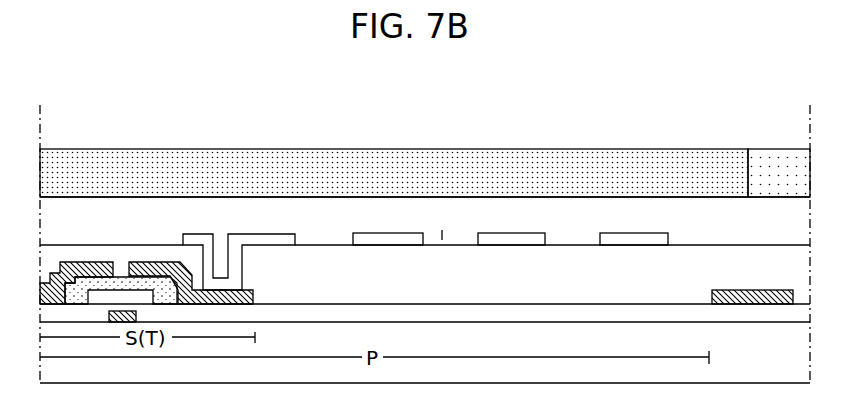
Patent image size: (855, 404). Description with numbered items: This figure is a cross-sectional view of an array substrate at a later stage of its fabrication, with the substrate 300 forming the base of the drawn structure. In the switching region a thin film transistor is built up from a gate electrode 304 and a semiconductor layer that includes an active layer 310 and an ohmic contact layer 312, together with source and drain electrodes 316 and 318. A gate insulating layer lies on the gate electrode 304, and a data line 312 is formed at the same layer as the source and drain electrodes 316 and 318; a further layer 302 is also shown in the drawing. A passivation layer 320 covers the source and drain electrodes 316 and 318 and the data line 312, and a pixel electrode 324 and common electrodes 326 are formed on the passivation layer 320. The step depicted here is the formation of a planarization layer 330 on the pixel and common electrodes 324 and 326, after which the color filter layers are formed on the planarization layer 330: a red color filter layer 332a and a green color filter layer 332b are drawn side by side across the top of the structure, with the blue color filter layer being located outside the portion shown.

The substrate 300 is at (789, 367).
The gate electrode 302 is at (119, 311).
The gate electrode 304 is at (685, 308).
The active layer 310 is at (177, 280).
The data line 312 is at (82, 262).
The source electrode 316 is at (46, 274).
The drain electrode 318 is at (281, 232).
The passivation layer 320 is at (442, 245).
The pixel electrode 324 is at (500, 233).
The common electrode 326 is at (378, 233).
The planarization layer 330 is at (565, 202).
The red color filter layer 332a is at (313, 152).
The green color filter layer 332b is at (775, 152).